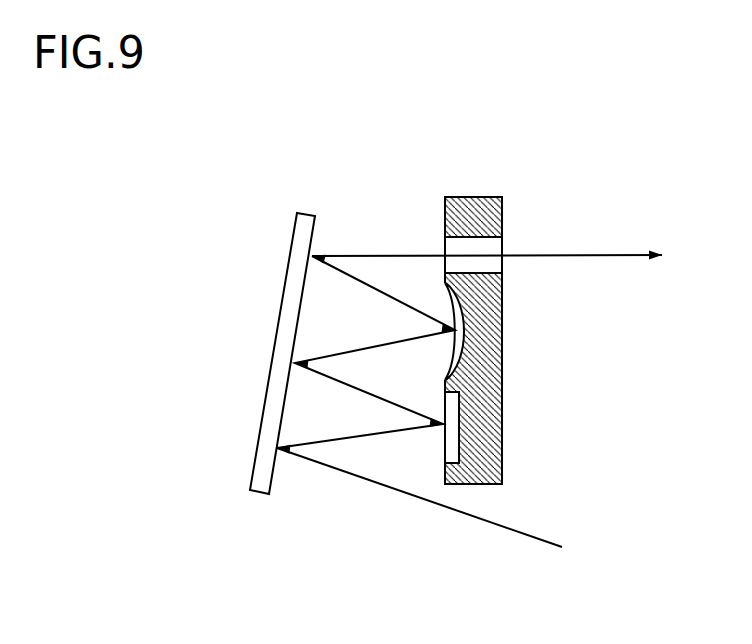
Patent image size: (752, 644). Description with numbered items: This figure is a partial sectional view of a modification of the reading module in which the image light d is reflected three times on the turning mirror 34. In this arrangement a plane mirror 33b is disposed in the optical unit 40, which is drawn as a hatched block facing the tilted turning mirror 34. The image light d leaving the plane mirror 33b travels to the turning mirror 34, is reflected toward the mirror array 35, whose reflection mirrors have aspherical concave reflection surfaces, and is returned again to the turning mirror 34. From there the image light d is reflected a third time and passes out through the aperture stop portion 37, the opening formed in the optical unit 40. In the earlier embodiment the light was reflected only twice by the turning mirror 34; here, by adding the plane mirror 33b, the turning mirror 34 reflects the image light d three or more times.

The optical unit 40 is at (477, 207).
The aperture stop portion 37 is at (502, 268).
The mirror array 35 is at (502, 356).
The plane mirror 33b is at (445, 440).
The turning mirror 34 is at (270, 367).
The image light d is at (502, 526).